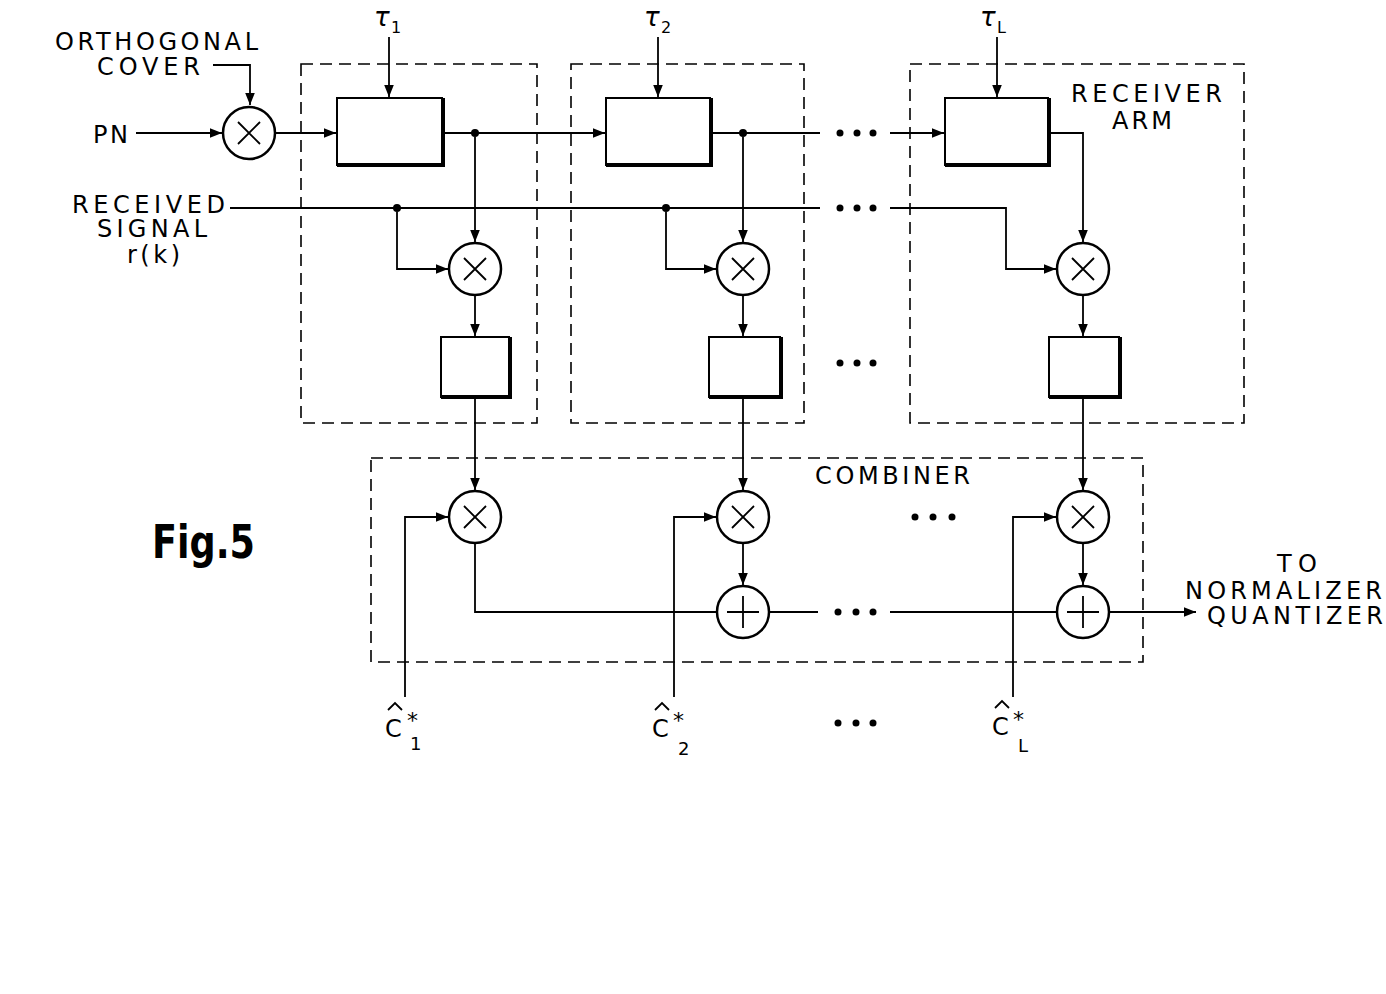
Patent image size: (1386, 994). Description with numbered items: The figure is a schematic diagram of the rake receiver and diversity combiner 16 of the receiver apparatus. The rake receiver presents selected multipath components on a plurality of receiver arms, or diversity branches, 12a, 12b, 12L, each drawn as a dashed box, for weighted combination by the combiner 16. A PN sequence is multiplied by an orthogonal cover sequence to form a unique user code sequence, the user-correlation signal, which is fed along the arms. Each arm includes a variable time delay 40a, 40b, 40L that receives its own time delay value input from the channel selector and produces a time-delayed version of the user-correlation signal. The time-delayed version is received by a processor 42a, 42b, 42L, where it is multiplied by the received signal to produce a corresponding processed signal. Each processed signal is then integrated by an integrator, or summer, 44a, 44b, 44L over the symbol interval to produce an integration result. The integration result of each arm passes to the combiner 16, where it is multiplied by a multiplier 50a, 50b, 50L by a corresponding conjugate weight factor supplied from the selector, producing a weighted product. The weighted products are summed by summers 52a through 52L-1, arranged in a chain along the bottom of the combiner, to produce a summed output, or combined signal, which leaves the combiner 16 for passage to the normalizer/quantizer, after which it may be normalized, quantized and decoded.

The receiver arm 12a is at (463, 64).
The receiver arm 12b is at (812, 50).
The receiver arm 12L is at (1162, 64).
The variable time delay 40a is at (512, 105).
The variable time delay 40b is at (781, 105).
The variable time delay 40L is at (958, 98).
The processor 42a is at (462, 293).
The processor 42b is at (727, 293).
The processor 42L is at (1179, 249).
The integrator 44a is at (441, 375).
The integrator 44b is at (709, 375).
The integrator 44L is at (1049, 355).
The diversity combiner 16 is at (371, 527).
The multiplier 50a is at (564, 507).
The multiplier 50b is at (857, 531).
The multiplier 50L is at (1109, 519).
The summer 52a is at (839, 583).
The summer 52L-1 is at (1083, 638).